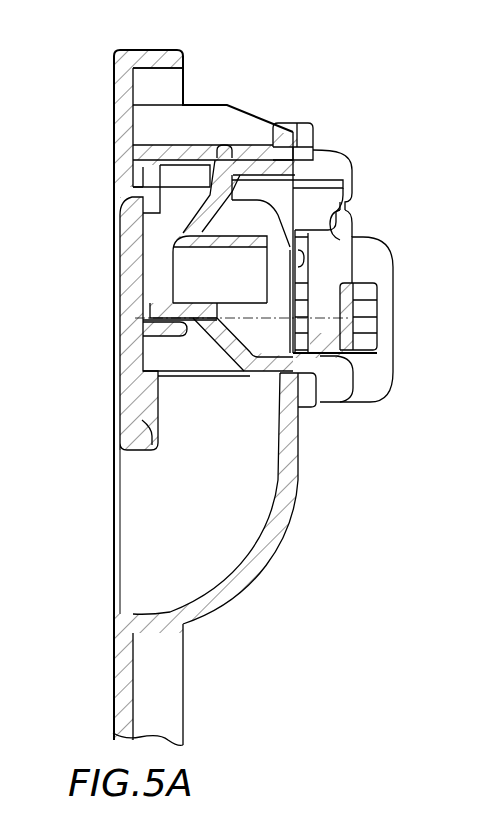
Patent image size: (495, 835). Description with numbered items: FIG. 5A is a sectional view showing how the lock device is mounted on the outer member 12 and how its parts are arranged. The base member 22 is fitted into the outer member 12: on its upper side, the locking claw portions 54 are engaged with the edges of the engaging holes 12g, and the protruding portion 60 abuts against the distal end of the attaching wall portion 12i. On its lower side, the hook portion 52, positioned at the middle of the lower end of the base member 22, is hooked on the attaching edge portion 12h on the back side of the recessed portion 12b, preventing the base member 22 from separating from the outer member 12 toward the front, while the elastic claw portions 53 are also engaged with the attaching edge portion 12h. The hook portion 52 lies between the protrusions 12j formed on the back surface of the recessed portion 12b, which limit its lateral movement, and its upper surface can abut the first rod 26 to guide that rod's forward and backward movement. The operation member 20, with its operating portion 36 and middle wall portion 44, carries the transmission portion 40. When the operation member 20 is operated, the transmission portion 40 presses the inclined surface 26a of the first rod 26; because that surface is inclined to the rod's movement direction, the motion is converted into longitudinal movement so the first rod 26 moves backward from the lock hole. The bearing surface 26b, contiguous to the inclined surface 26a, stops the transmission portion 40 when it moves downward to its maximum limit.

The outer member 12 is at (112, 72).
The engaging holes 12g is at (232, 145).
The attaching wall portion 12i is at (185, 145).
The attaching edge portion 12h is at (280, 432).
The protrusions 12j is at (307, 393).
The recessed portion 12b is at (276, 532).
The operation member 20 is at (128, 258).
The base member 22 is at (197, 238).
The first rod 26 is at (348, 290).
The inclined surface 26a is at (338, 230).
The bearing surface 26b is at (355, 296).
The operating portion 36 is at (133, 436).
The transmission portion 40 is at (310, 207).
The middle wall portion 44 is at (168, 336).
The hook portion 52 is at (337, 377).
The elastic claw portions 53 is at (258, 388).
The locking claw portions 54 is at (262, 118).
The protruding portion 60 is at (302, 118).